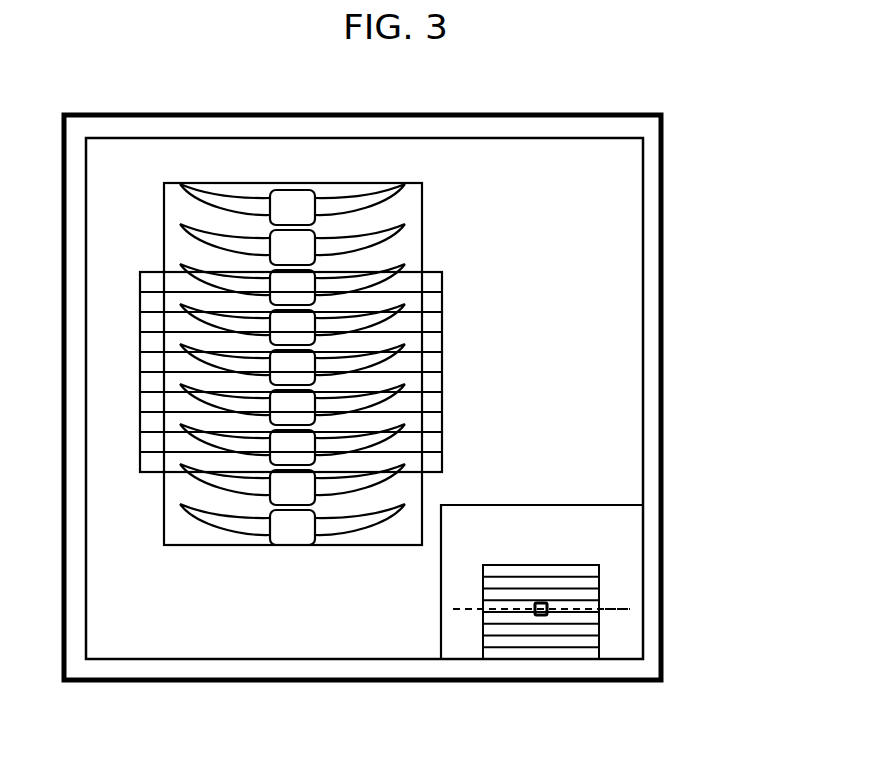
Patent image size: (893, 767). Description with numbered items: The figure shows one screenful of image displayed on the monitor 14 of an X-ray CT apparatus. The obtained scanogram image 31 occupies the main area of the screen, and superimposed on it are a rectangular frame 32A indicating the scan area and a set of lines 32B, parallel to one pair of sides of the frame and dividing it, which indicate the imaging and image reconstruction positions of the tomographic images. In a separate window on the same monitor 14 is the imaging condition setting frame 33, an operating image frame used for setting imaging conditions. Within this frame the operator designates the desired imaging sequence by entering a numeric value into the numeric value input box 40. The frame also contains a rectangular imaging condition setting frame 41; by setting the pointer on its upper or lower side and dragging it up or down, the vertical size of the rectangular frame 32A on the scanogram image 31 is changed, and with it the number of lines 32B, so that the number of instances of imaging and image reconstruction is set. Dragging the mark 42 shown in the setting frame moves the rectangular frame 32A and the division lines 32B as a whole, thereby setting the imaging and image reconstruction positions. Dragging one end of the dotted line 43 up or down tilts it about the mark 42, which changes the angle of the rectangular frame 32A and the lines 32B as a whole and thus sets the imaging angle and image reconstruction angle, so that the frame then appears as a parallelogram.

The monitor 14 is at (665, 375).
The scanogram image 31 is at (400, 212).
The rectangular frame 32A is at (442, 326).
The lines 32B is at (442, 368).
The numeric value input box 40 is at (523, 518).
The rectangular imaging condition setting frame 41 is at (600, 573).
The imaging condition setting frame 33 is at (627, 593).
The mark 42 is at (541, 616).
The dotted line 43 is at (617, 612).